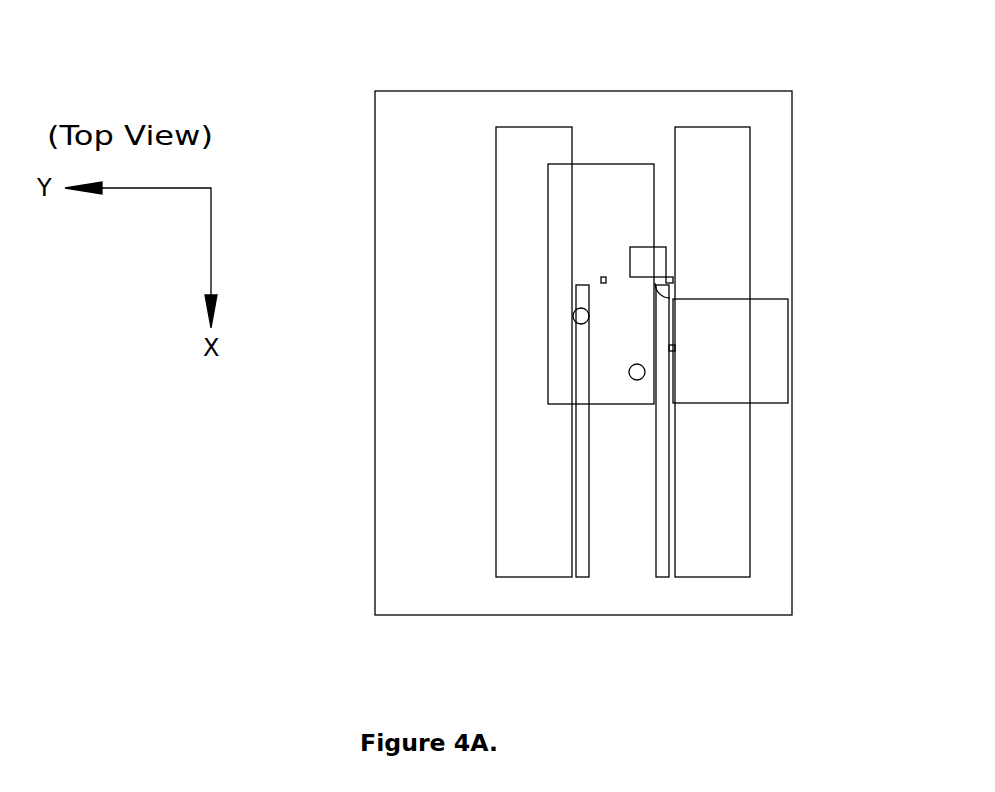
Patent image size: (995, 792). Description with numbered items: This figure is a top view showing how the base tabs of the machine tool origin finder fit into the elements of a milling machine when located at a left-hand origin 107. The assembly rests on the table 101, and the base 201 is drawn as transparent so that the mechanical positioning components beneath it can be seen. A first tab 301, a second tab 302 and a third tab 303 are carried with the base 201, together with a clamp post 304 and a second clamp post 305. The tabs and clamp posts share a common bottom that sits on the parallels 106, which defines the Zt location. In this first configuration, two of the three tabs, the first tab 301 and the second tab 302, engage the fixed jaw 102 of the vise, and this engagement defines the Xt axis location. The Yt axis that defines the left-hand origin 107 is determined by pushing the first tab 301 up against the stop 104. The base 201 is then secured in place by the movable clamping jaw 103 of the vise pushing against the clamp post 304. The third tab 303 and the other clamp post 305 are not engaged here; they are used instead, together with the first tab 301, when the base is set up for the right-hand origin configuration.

The table 101 is at (397, 106).
The fixed jaw 102 is at (704, 155).
The movable clamping jaw 103 is at (522, 155).
The stop 104 is at (665, 265).
The parallels 106 is at (622, 468).
The left-hand origin 107 is at (673, 279).
The base 201 is at (622, 175).
The first tab 301 is at (671, 283).
The second tab 302 is at (675, 348).
The third tab 303 is at (601, 280).
The clamp post 304 is at (574, 316).
The clamp post 305 is at (629, 372).